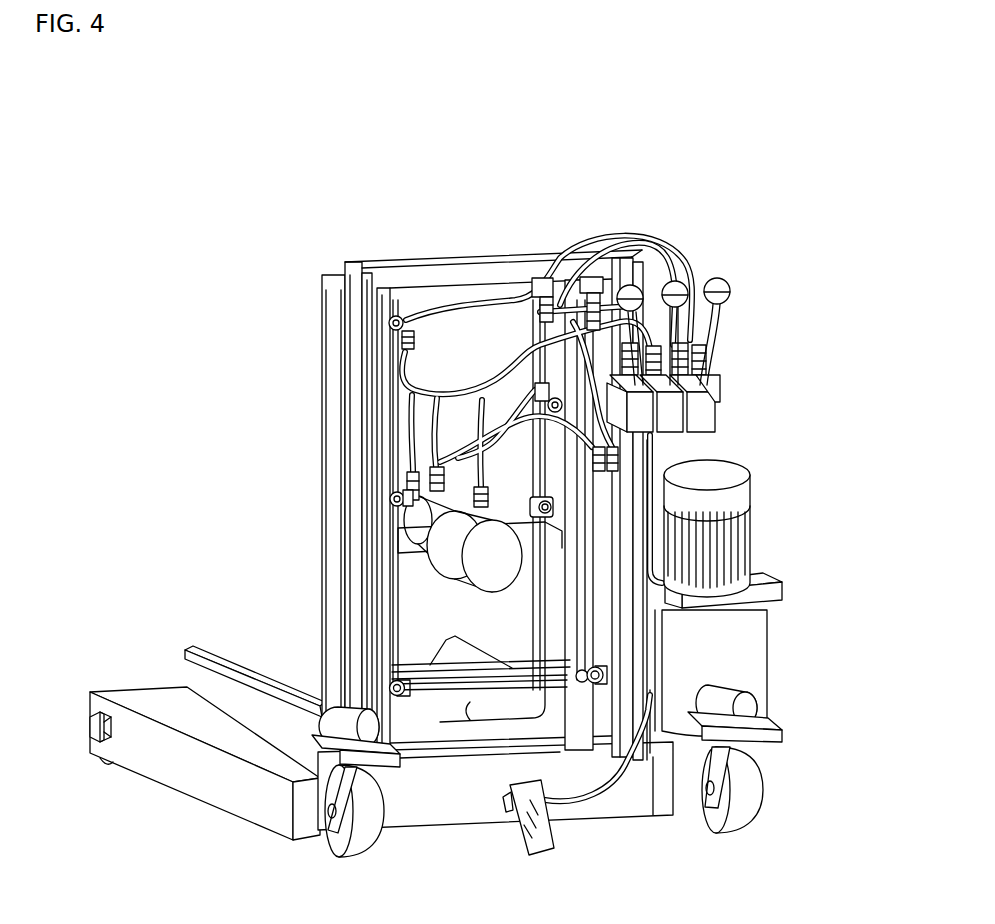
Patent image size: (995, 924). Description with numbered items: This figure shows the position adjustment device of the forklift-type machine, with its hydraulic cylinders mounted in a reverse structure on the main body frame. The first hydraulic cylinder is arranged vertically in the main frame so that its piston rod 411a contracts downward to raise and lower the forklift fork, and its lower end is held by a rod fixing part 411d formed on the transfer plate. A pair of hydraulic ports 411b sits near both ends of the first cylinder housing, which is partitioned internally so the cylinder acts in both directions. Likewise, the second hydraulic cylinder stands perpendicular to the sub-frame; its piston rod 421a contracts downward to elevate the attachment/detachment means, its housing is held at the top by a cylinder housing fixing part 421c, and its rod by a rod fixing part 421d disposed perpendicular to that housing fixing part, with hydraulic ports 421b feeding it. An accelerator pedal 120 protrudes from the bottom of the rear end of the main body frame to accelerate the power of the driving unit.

The piston rod 411a is at (395, 597).
The hydraulic port 411b is at (390, 285).
The rod fixing part 411d is at (410, 700).
The piston rod 421a is at (596, 563).
The hydraulic port 421b is at (548, 318).
The cylinder housing fixing part 421c is at (592, 268).
The rod fixing part 421d is at (607, 662).
The accelerator pedal 120 is at (548, 840).